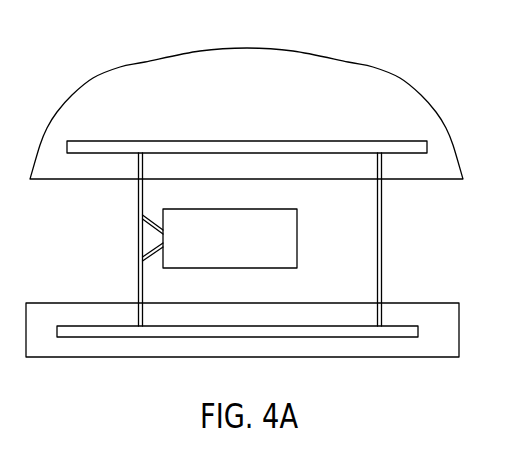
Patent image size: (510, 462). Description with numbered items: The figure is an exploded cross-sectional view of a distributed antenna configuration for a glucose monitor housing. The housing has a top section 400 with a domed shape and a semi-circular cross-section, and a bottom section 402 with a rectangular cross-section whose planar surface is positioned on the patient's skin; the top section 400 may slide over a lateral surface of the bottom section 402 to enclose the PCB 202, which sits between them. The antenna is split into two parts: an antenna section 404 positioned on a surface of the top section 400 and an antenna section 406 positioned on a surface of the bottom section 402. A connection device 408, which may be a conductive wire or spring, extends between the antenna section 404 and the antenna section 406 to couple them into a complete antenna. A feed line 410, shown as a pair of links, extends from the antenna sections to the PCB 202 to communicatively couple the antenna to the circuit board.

The top section 400 is at (145, 63).
The antenna section 404 is at (73, 155).
The connection device 408 is at (382, 227).
The PCB 202 is at (298, 241).
The feed line 410 is at (138, 221).
The bottom section 402 is at (57, 303).
The antenna section 406 is at (409, 325).